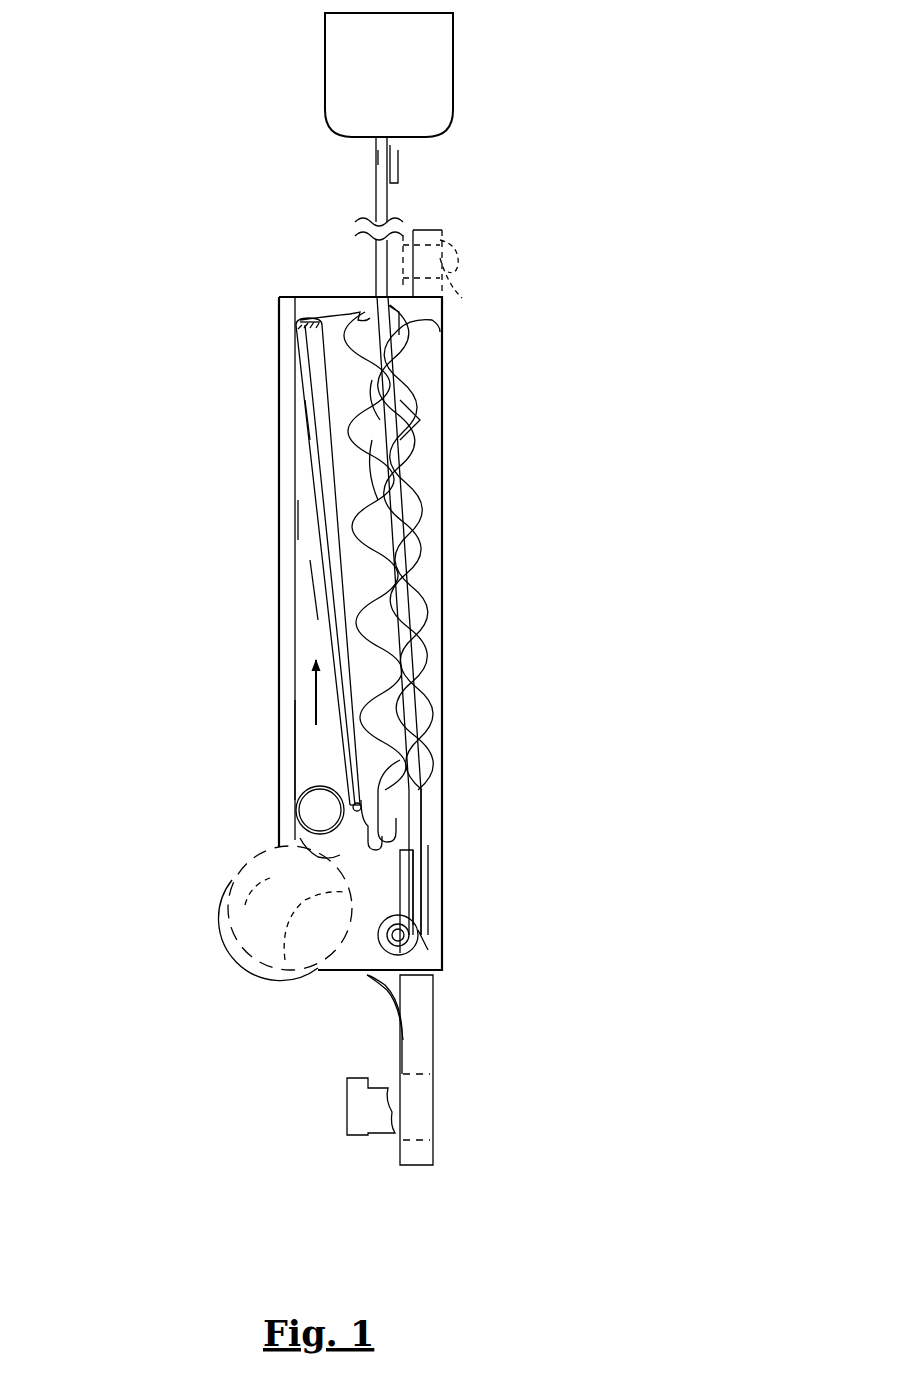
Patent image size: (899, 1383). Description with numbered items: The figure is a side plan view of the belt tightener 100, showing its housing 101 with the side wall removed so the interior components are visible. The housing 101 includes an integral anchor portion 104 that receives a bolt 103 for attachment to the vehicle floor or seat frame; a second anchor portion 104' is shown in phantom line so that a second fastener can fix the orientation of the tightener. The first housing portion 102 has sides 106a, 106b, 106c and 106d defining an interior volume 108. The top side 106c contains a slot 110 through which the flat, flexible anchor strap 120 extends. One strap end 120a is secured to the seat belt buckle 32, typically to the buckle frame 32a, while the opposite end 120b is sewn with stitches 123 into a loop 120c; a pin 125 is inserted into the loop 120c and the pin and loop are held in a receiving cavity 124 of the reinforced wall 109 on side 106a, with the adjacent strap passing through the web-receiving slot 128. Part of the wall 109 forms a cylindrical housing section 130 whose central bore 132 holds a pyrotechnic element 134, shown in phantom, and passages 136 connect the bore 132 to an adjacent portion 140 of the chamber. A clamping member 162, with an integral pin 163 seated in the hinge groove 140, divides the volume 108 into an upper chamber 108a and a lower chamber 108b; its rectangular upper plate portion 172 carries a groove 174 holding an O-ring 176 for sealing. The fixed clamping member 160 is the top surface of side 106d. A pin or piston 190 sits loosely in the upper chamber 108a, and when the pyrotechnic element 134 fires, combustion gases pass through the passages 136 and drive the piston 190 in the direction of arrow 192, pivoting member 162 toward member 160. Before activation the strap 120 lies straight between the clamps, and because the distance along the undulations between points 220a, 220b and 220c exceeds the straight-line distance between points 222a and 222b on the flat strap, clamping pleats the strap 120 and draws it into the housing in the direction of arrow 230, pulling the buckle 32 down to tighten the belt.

The seat belt buckle 32 is at (420, 90).
The buckle frame 32a is at (395, 147).
The anchor strap 120 is at (390, 197).
The strap end 120a is at (377, 163).
The opposite strap end 120b is at (424, 902).
The loop 120c is at (407, 935).
The arrow 230 is at (345, 256).
The anchor portion 104 is at (472, 695).
The outlet tube alternate position 104' is at (454, 672).
The bolt 103 is at (462, 300).
The slot 110 is at (389, 306).
The housing 101 is at (298, 638).
The side 106a is at (280, 968).
The side 106b is at (279, 385).
The side 106c is at (302, 307).
The side 106d is at (428, 600).
The first housing portion 102 is at (286, 752).
The pin or piston 190 is at (345, 832).
The arrow 192 is at (316, 692).
The belt tightener 100 is at (230, 494).
The groove 174 is at (318, 472).
The O-ring 176 is at (297, 321).
The clamping member 162 is at (356, 360).
The upper plate portion 172 is at (308, 420).
The upper chamber portion 108a is at (312, 524).
The interior volume 108 is at (316, 595).
The lower chamber portion 108b is at (375, 440).
The point on flexible member 222a is at (383, 452).
The coil segment 222b is at (393, 398).
The point on undulating feature 220a is at (400, 452).
The point on undulating feature 220b is at (400, 438).
The spring segment 220c is at (428, 398).
The clamping member 160 is at (412, 422).
The groove / hinge 140 is at (318, 808).
The pin 163 is at (400, 768).
The passages 136 is at (312, 858).
The cylindrical housing section 130 is at (253, 852).
The central bore 132 is at (255, 880).
The pyrotechnic element 134 is at (240, 915).
The web-receiving slot 128 is at (424, 816).
The reinforced wall 109 is at (382, 865).
The sew stitches 123 is at (416, 857).
The receiving cavity 124 is at (402, 938).
The pin 125 is at (418, 977).